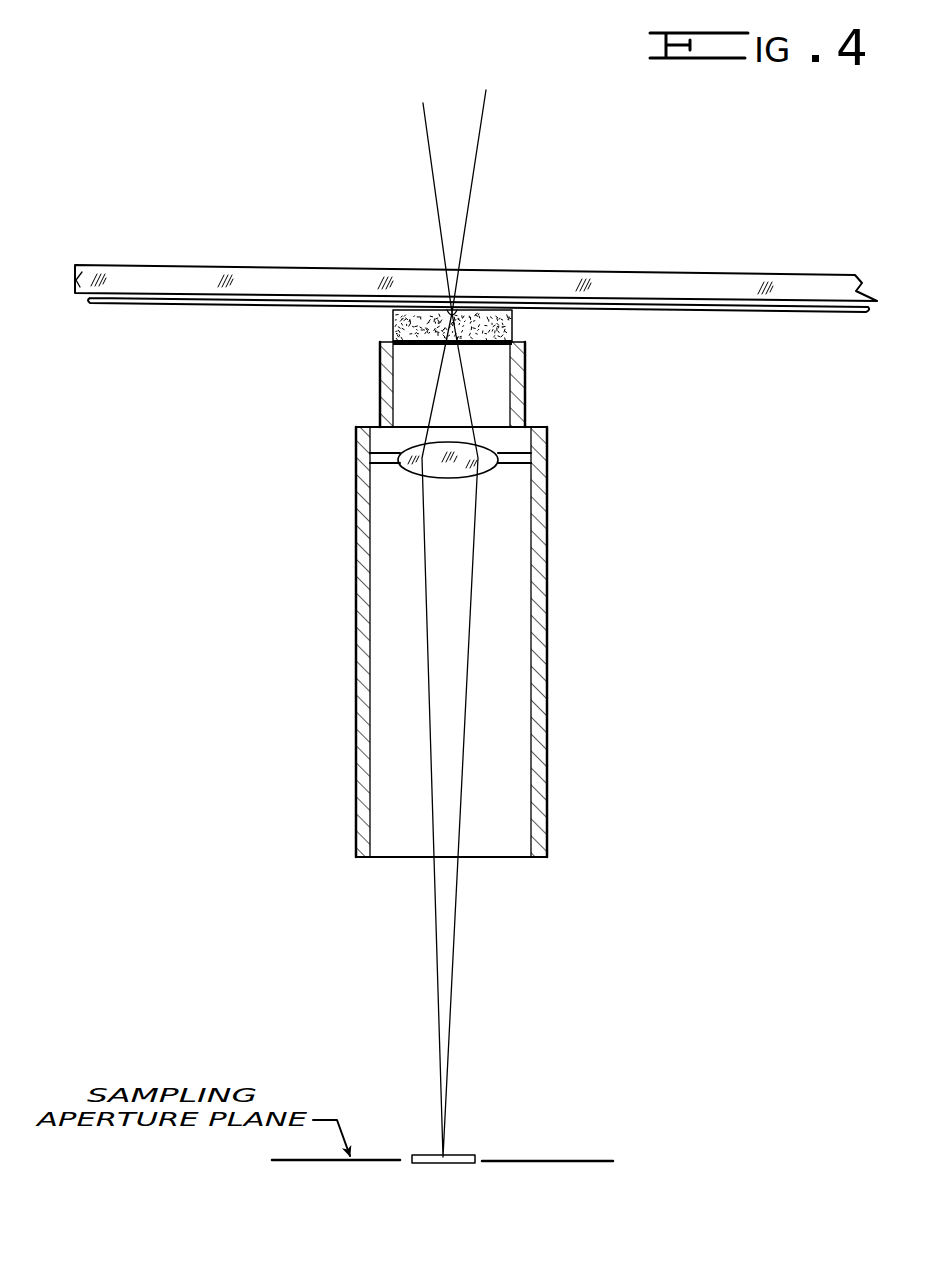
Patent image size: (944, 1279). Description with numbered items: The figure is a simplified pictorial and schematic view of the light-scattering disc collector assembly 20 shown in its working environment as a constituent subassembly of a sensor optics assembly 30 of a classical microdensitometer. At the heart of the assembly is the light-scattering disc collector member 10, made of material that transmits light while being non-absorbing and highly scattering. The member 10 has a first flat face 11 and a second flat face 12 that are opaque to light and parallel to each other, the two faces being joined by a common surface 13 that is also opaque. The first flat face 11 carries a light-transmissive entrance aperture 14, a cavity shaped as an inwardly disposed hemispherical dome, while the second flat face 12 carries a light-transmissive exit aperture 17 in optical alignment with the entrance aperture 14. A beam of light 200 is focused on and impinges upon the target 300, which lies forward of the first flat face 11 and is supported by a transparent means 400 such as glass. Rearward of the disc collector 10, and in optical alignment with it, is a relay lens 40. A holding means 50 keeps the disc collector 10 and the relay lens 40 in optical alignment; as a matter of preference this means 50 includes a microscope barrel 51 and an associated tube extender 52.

The light-scattering disc collector member 10 is at (376, 331).
The first flat face 11 is at (410, 302).
The second flat face 12 is at (478, 345).
The common surface 13 is at (513, 319).
The light-transmissive entrance aperture 14 is at (458, 304).
The light-transmissive exit aperture 17 is at (444, 345).
The light-scattering disc collector assembly 20 is at (358, 420).
The sensor optics assembly 30 is at (281, 606).
The relay lens 40 is at (470, 470).
The means for holding the light-scattering disc collector and relay lens 50 is at (574, 416).
The microscope barrel 51 is at (548, 697).
The tube extender 52 is at (526, 392).
The beam of light 200 is at (457, 138).
The target 300 is at (133, 302).
The transparent means 400 is at (670, 281).